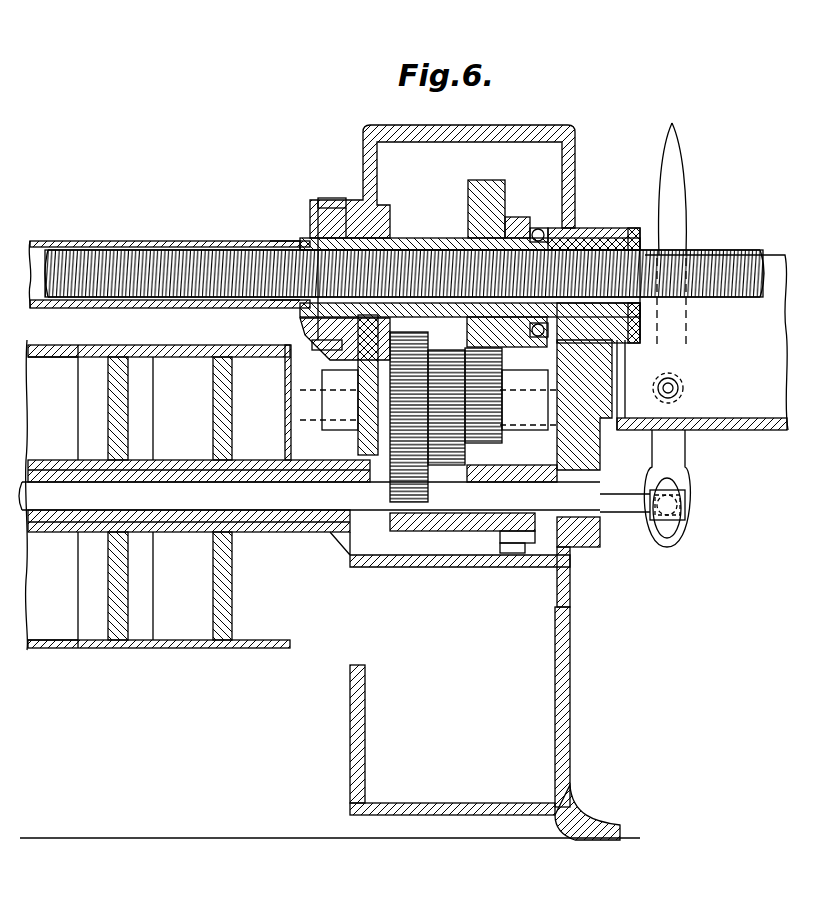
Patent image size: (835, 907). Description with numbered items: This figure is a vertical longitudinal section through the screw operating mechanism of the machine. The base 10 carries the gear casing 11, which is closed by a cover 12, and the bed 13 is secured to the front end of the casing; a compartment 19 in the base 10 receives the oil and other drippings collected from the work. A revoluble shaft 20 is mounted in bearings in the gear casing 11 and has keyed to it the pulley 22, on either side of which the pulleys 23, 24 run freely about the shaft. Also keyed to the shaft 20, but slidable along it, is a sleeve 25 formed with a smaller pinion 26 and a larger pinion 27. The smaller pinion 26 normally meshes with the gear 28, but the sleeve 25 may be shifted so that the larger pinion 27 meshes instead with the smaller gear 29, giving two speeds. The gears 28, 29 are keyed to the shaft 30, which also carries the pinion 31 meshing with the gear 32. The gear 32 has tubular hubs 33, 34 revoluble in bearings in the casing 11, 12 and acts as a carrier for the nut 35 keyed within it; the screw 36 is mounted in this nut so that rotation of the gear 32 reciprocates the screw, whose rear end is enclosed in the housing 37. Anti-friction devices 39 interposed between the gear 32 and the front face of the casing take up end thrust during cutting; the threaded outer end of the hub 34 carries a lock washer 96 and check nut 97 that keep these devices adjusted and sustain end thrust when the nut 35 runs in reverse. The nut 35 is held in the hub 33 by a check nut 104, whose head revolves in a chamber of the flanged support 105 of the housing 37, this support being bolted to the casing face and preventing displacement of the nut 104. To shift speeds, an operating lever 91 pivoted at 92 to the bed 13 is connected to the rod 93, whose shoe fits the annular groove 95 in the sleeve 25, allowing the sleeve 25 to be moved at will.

The base 10 is at (573, 752).
The gear casing 11 is at (360, 457).
The cover 12 is at (468, 126).
The bed 13 is at (747, 430).
The compartment 19 is at (368, 748).
The revoluble shaft 20 is at (313, 503).
The pulley 22 is at (118, 656).
The pulley 23 is at (40, 653).
The pulley 24 is at (235, 656).
The sleeve 25 is at (447, 519).
The smaller pinion 26 is at (407, 533).
The larger pinion 27 is at (490, 545).
The gear 28 is at (403, 457).
The smaller gear 29 is at (470, 449).
The shaft 30 is at (324, 395).
The pinion 31 is at (505, 383).
The gear 32 is at (488, 180).
The tubular hub 33 is at (398, 240).
The tubular hub 34 is at (592, 229).
The nut 35 is at (442, 238).
The screw 36 is at (717, 263).
The housing 37 is at (180, 242).
The anti-friction devices 39 is at (540, 227).
The operating lever 91 is at (676, 180).
The pivot 92 is at (680, 386).
The rod 93 is at (624, 508).
The annular groove 95 is at (510, 555).
The lock washer 96 is at (630, 228).
The check nut 97 is at (642, 335).
The check nut 104 is at (312, 240).
The flanged support 105 is at (285, 240).